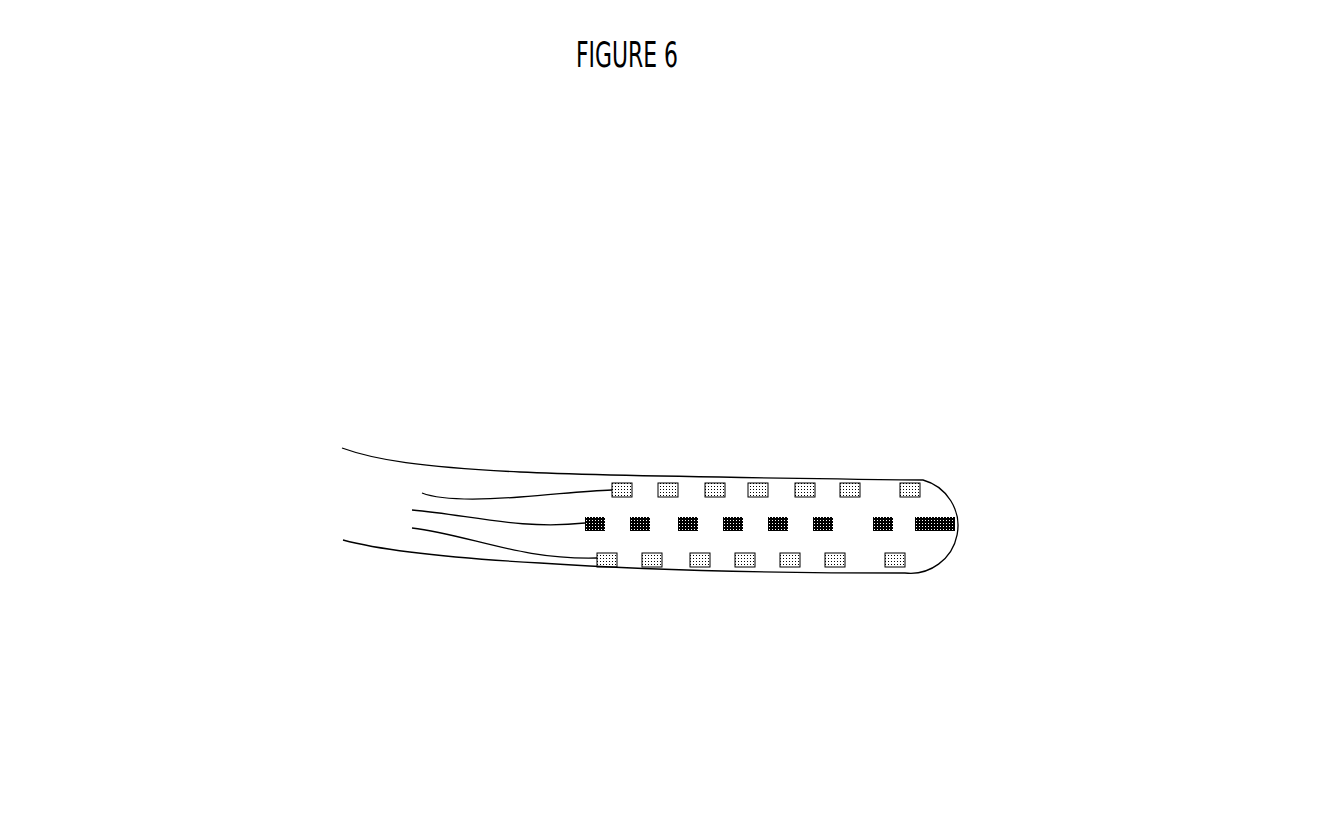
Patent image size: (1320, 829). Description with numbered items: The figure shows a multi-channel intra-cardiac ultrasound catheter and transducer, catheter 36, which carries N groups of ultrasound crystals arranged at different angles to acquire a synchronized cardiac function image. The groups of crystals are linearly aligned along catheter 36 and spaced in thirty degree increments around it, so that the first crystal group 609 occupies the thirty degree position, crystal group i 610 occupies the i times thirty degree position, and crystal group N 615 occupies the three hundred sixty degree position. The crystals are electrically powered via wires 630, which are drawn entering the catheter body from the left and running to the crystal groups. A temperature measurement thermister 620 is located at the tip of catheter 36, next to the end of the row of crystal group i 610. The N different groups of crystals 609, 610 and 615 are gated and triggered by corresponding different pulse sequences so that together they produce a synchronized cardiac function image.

The catheter 36 is at (352, 500).
The wires 630 is at (455, 497).
The crystal group 1 609 is at (925, 487).
The crystal group i 610 is at (893, 527).
The crystal group N 615 is at (833, 570).
The temperature measurement thermister 620 is at (955, 522).